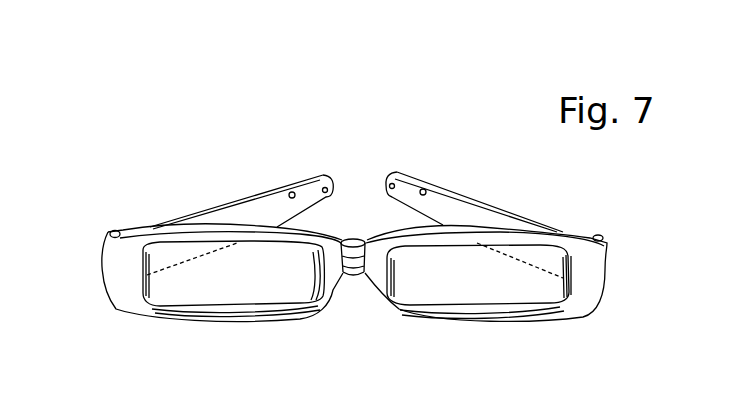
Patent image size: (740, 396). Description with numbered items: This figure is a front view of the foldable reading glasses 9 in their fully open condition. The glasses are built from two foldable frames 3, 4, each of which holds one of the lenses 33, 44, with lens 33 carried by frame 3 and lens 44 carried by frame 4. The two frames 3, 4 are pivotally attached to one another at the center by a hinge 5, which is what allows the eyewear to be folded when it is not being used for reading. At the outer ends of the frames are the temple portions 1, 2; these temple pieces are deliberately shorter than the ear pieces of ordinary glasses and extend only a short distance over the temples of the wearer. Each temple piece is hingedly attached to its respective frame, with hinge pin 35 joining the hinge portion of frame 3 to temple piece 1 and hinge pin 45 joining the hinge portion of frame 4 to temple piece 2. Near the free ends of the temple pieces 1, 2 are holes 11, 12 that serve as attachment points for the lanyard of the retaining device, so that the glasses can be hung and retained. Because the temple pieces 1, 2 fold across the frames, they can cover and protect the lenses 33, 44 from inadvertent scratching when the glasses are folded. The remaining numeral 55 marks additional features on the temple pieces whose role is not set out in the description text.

The foldable reading glasses 9 is at (132, 148).
The temple portion 1 is at (498, 223).
The temple portion 2 is at (237, 208).
The frame 3 is at (473, 232).
The frame 4 is at (200, 228).
The hinge 5 is at (353, 243).
The attachment point 11 is at (392, 184).
The attachment point 12 is at (325, 187).
The lens 33 is at (473, 313).
The hinge pin 35 is at (599, 235).
The lens 44 is at (213, 320).
The hinge pin 45 is at (113, 229).
The temple holes 55 is at (292, 192).